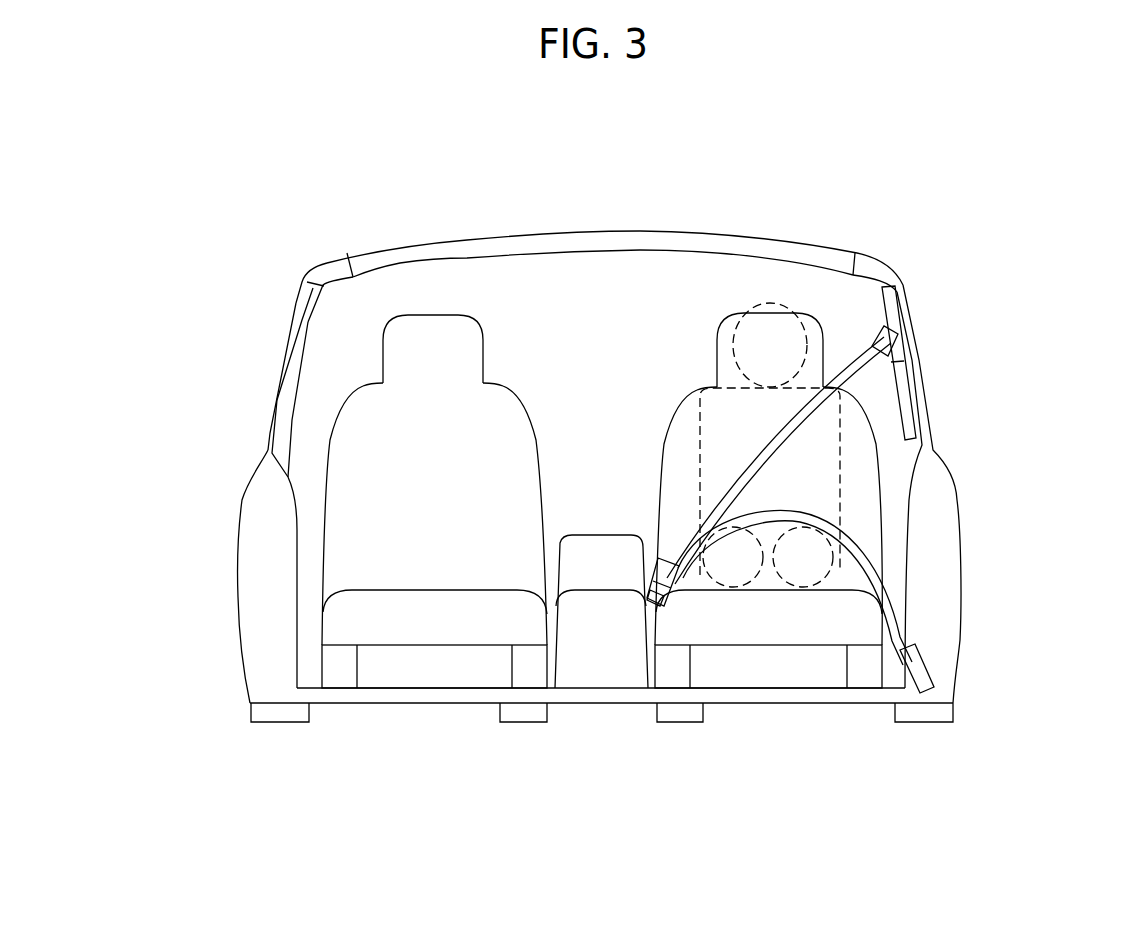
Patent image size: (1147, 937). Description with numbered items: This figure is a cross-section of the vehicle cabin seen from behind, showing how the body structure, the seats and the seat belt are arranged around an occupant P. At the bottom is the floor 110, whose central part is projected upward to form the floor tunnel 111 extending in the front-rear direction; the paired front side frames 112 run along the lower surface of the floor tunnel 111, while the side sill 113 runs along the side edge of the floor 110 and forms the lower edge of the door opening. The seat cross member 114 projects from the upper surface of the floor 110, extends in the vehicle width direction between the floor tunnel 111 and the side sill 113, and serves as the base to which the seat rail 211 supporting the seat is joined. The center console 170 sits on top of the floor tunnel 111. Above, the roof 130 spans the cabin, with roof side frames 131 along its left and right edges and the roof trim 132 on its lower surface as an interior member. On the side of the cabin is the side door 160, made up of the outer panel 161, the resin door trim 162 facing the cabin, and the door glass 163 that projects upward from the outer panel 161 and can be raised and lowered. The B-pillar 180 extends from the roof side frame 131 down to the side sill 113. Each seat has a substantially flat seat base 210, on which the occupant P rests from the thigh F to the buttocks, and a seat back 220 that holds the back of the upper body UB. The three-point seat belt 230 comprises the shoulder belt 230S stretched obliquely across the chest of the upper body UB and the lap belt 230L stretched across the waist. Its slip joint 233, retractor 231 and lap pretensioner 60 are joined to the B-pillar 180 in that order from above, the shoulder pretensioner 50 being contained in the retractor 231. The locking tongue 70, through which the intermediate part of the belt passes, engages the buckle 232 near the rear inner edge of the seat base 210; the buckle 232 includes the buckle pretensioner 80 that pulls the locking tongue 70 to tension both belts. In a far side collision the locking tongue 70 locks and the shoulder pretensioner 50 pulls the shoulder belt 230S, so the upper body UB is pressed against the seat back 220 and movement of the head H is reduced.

The roof 130 is at (467, 240).
The roof side frame 131 is at (327, 263).
The roof trim 132 is at (400, 263).
The center console 170 is at (566, 484).
The floor tunnel 111 is at (597, 590).
The floor 110 is at (579, 779).
The front side frame 112 is at (515, 720).
The side sill 113 is at (263, 720).
The seat cross member 114 is at (782, 690).
The side door 160 is at (193, 557).
The outer panel 161 is at (240, 597).
The door trim 162 is at (295, 583).
The door glass 163 is at (285, 360).
The B-pillar 180 is at (302, 320).
The seat back 220 is at (872, 592).
The seat base 210 is at (872, 731).
The seat rail 211 is at (878, 667).
The seat belt 230 is at (856, 487).
The shoulder belt 230S is at (737, 473).
The lap belt 230L is at (773, 512).
The retractor 231 is at (1001, 363).
The shoulder pretensioner 50 is at (915, 413).
The slip joint 233 is at (890, 337).
The buckle 232 is at (723, 715).
The buckle pretensioner 80 is at (723, 715).
The locking tongue 70 is at (665, 600).
The lap pretensioner 60 is at (925, 670).
The occupant P is at (884, 341).
The head H is at (790, 312).
The upper body UB is at (807, 392).
The thigh F is at (833, 565).